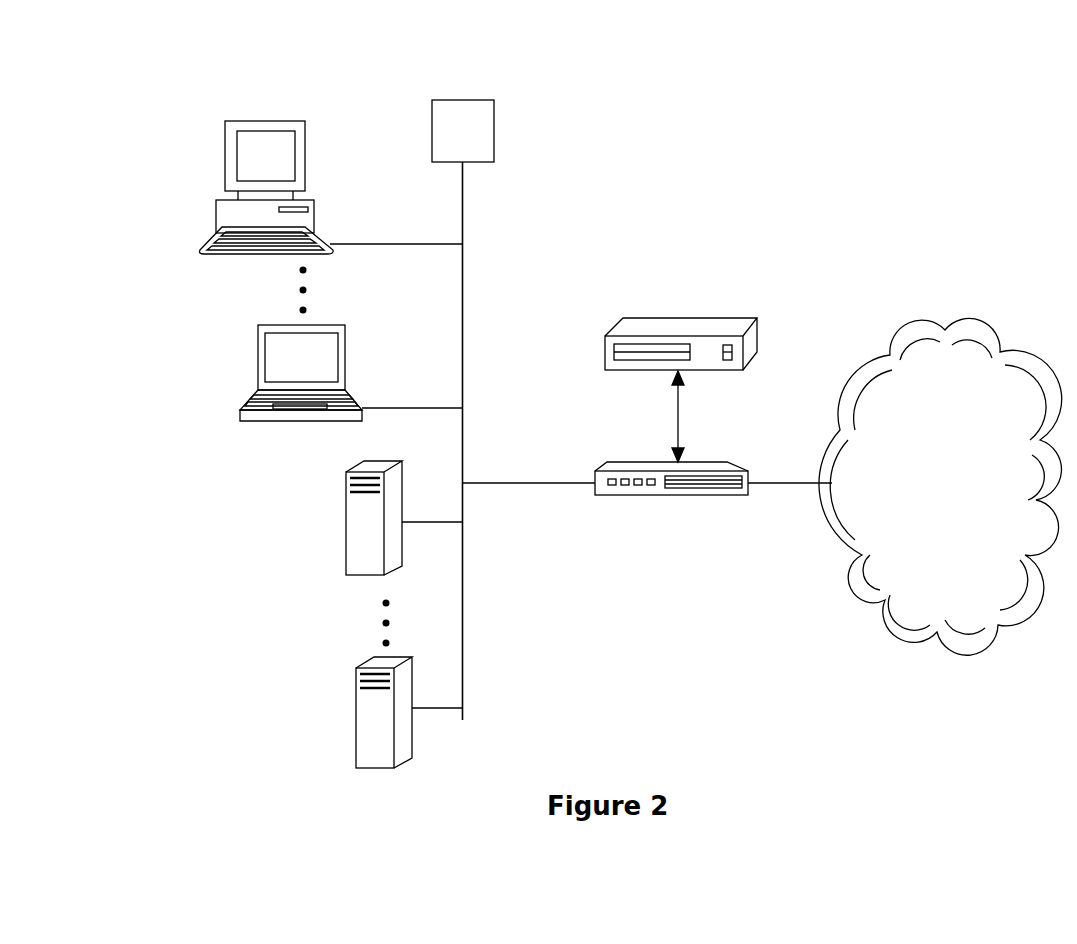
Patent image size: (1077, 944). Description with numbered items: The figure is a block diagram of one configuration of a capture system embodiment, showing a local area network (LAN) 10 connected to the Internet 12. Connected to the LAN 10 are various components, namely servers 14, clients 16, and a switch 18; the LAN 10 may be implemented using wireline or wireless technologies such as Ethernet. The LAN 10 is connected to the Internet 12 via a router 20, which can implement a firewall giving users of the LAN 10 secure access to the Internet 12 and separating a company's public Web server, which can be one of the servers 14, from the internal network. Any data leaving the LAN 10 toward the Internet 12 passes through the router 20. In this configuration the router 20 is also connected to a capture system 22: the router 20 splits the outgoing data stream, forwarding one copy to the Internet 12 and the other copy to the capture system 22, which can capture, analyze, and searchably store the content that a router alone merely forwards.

The local area network 10 is at (353, 441).
The Internet 12 is at (940, 486).
The servers 14 is at (332, 543).
The clients 16 is at (198, 224).
The switch 18 is at (472, 92).
The router 20 is at (671, 503).
The capture system 22 is at (687, 307).